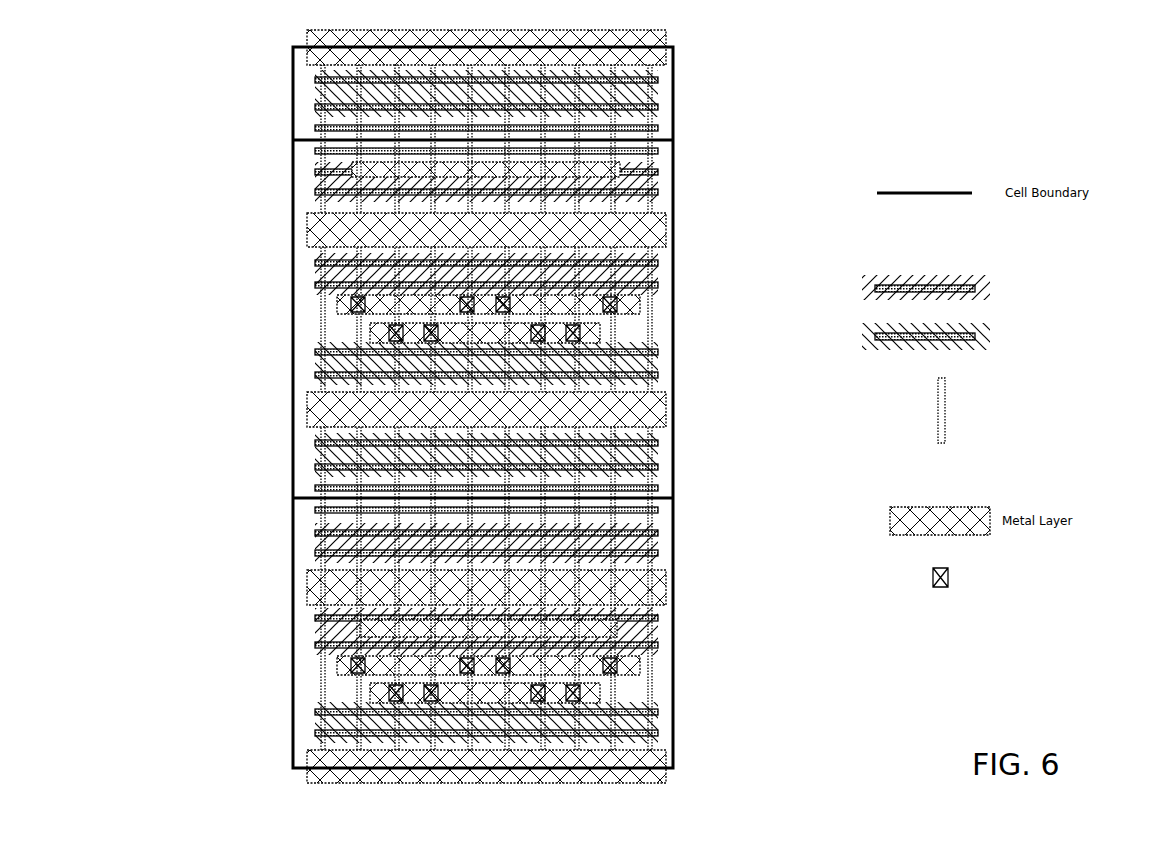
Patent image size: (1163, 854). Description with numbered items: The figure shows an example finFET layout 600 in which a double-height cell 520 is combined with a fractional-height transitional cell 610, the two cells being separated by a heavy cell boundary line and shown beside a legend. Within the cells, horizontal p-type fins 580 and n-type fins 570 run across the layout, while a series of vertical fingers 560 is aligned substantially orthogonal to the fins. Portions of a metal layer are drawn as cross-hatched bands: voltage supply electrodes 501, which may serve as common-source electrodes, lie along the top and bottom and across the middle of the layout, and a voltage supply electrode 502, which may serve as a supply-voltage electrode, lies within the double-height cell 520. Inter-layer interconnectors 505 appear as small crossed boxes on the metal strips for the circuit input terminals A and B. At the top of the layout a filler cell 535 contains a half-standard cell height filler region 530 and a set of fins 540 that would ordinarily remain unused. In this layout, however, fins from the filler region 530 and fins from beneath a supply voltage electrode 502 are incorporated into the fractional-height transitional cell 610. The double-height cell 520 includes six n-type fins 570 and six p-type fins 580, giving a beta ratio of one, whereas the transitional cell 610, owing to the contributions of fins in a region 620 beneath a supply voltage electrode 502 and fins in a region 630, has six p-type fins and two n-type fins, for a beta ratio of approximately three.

The layout 600 is at (950, 36).
The voltage supply electrode 501 is at (307, 33).
The voltage supply electrode 502 is at (303, 230).
The filler cell 535 is at (293, 93).
The half-standard cell height filler region 530 is at (697, 78).
The unused fins 540 is at (697, 122).
The double-height cell 520 is at (685, 143).
The fractional-height transitional cell 610 is at (685, 507).
The region beneath supply voltage electrode 620 is at (278, 567).
The fin region 630 is at (278, 522).
The p-type fins 580 is at (983, 287).
The n-type fins 570 is at (985, 336).
The fingers 560 is at (980, 410).
The inter-layer interconnectors 505 is at (1027, 577).